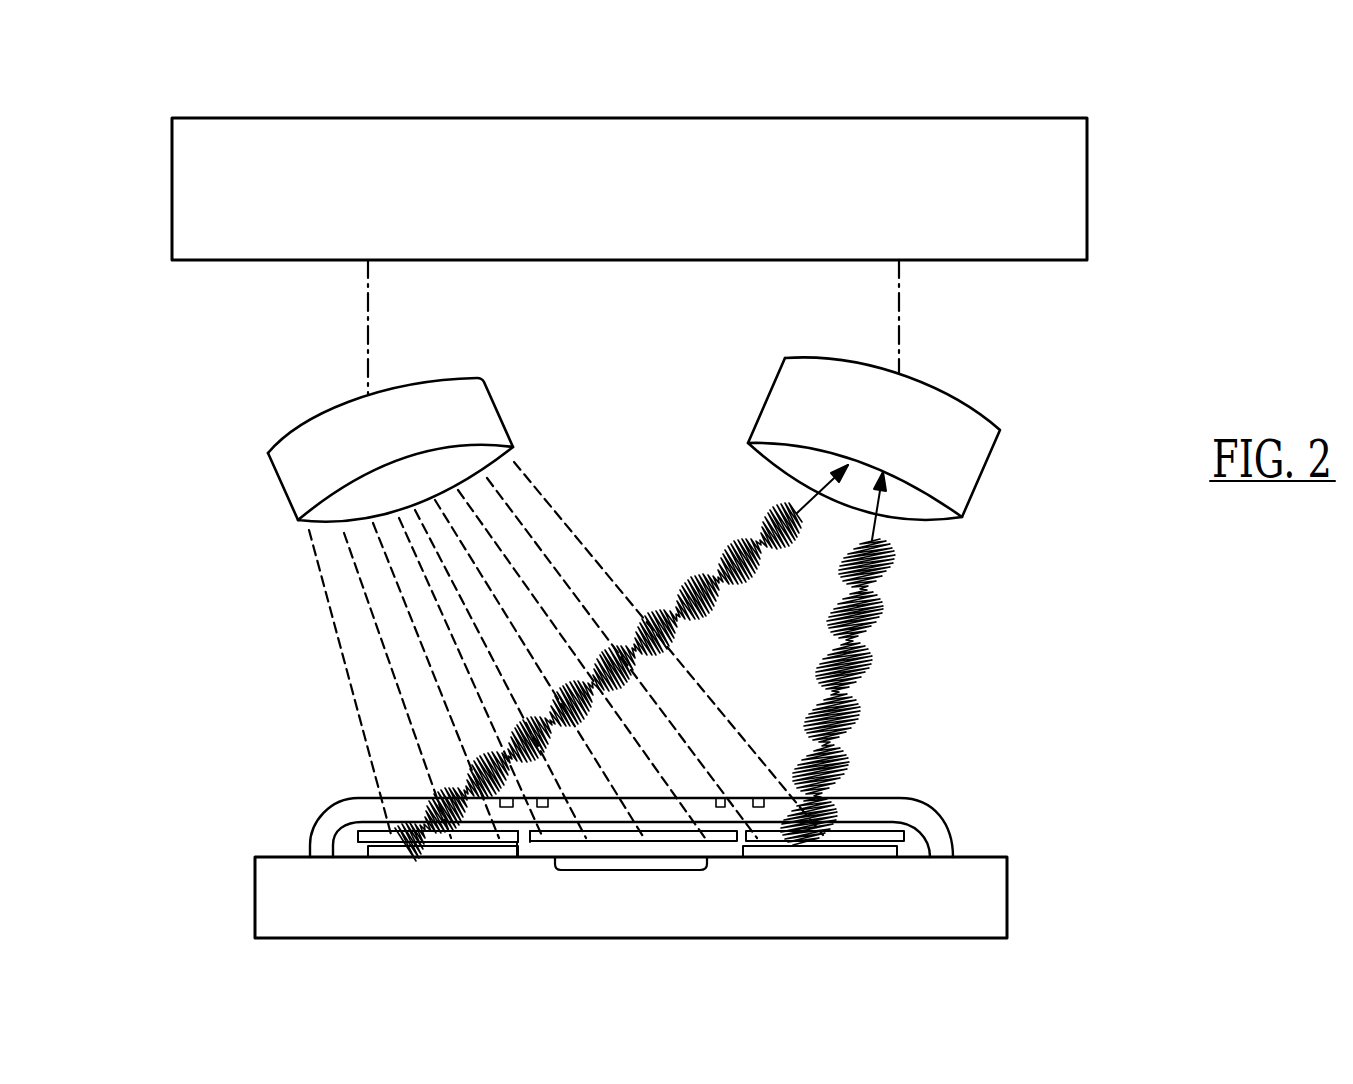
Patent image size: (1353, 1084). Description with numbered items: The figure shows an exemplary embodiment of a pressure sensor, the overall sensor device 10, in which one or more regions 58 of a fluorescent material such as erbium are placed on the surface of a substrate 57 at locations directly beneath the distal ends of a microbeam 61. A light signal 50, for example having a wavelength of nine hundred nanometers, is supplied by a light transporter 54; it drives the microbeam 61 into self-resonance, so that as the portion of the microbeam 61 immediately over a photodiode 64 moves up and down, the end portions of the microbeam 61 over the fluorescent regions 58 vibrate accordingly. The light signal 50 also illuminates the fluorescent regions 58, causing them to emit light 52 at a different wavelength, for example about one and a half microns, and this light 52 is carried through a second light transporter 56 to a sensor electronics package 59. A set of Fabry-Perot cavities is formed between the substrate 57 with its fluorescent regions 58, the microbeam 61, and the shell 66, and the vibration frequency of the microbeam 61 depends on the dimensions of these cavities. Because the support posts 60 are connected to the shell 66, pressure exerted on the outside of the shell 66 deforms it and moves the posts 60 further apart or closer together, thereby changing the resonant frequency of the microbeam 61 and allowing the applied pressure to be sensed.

The sensor device 10 is at (670, 809).
The light signal 50 is at (303, 645).
The light 52 is at (900, 606).
The light transporter 54 is at (310, 472).
The light transporter 56 is at (967, 470).
The substrate 57 is at (277, 905).
The fluorescent regions 58 is at (372, 857).
The sensor electronics package 59 is at (652, 203).
The support posts 60 is at (516, 827).
The microbeam 61 is at (560, 822).
The photodiode 64 is at (653, 870).
The shell 66 is at (957, 831).